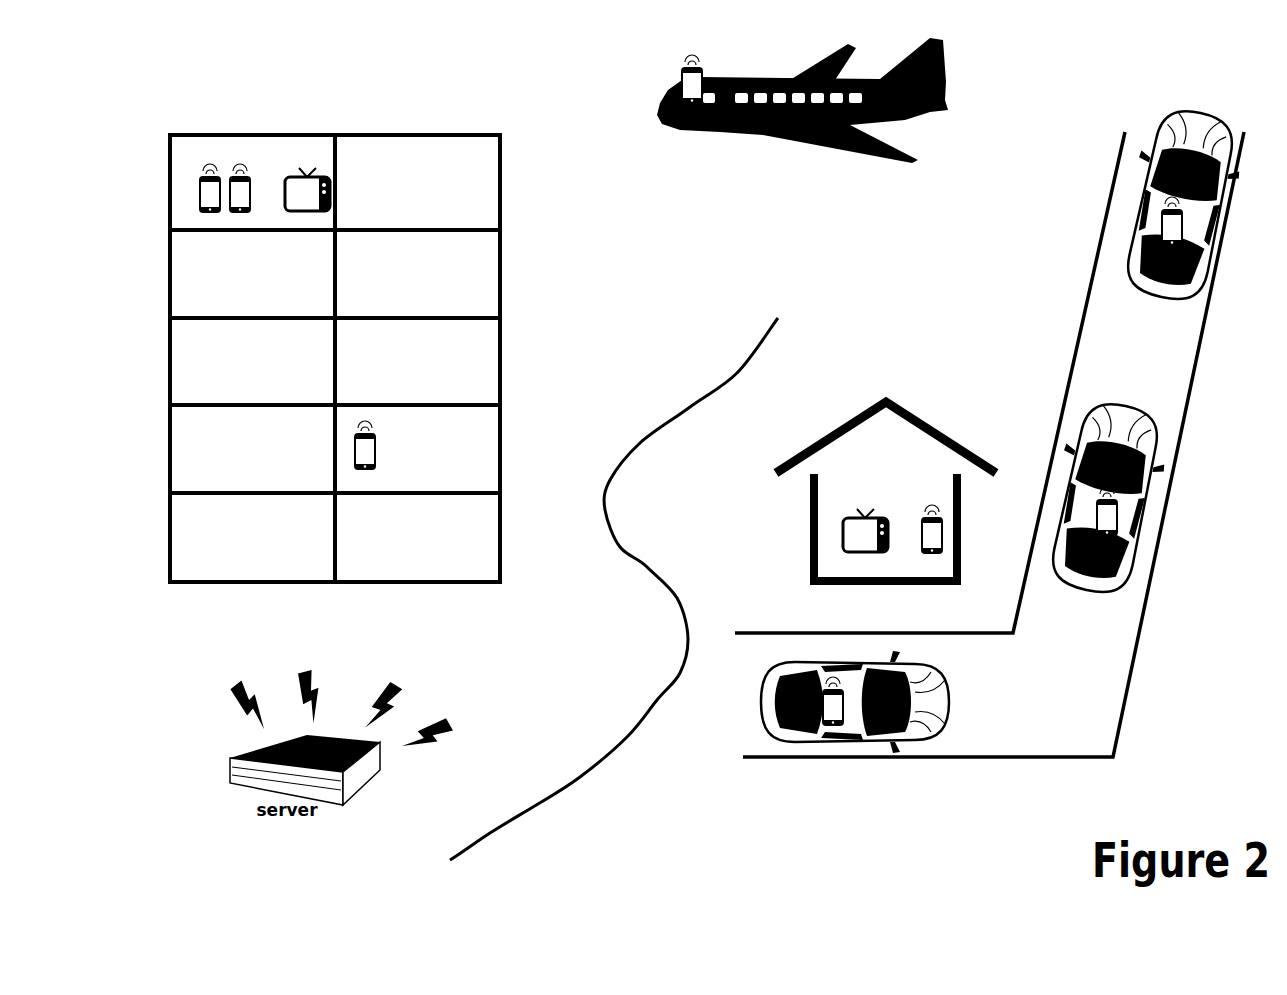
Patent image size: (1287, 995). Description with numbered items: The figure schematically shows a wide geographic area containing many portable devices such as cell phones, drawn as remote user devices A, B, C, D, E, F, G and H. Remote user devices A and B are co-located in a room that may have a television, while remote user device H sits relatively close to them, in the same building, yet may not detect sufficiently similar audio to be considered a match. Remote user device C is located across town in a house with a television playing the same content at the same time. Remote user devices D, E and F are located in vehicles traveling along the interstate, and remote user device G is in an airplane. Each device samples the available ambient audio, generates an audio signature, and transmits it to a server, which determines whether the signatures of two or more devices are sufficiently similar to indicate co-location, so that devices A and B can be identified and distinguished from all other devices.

The remote user device A is at (212, 197).
The remote user device B is at (242, 198).
The remote user device C is at (935, 535).
The remote user device D is at (835, 710).
The remote user device E is at (1107, 517).
The remote user device F is at (1175, 235).
The remote user device G is at (692, 88).
The remote user device H is at (370, 452).